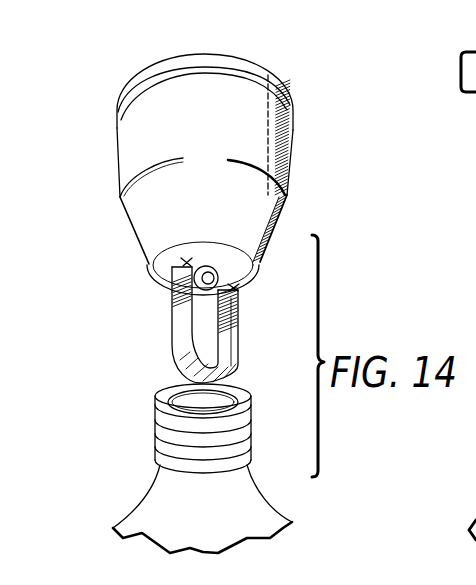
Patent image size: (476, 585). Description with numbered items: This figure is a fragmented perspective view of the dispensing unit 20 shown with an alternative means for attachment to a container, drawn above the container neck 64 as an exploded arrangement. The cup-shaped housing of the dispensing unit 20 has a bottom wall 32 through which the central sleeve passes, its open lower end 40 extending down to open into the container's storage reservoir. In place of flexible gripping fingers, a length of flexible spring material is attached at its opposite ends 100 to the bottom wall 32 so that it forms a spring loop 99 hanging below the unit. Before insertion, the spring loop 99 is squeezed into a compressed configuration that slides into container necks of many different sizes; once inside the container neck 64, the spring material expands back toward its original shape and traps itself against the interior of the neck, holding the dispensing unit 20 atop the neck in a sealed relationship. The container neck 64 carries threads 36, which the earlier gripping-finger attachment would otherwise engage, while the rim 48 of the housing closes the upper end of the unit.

The dispensing unit 20 is at (108, 203).
The cap top rim 48 is at (263, 81).
The bottom wall 32 is at (261, 271).
The open lower end 40 is at (224, 262).
The spring loop 99 is at (230, 332).
The opposite ends 100 is at (183, 259).
The threads 36 is at (163, 445).
The container neck 64 is at (157, 497).